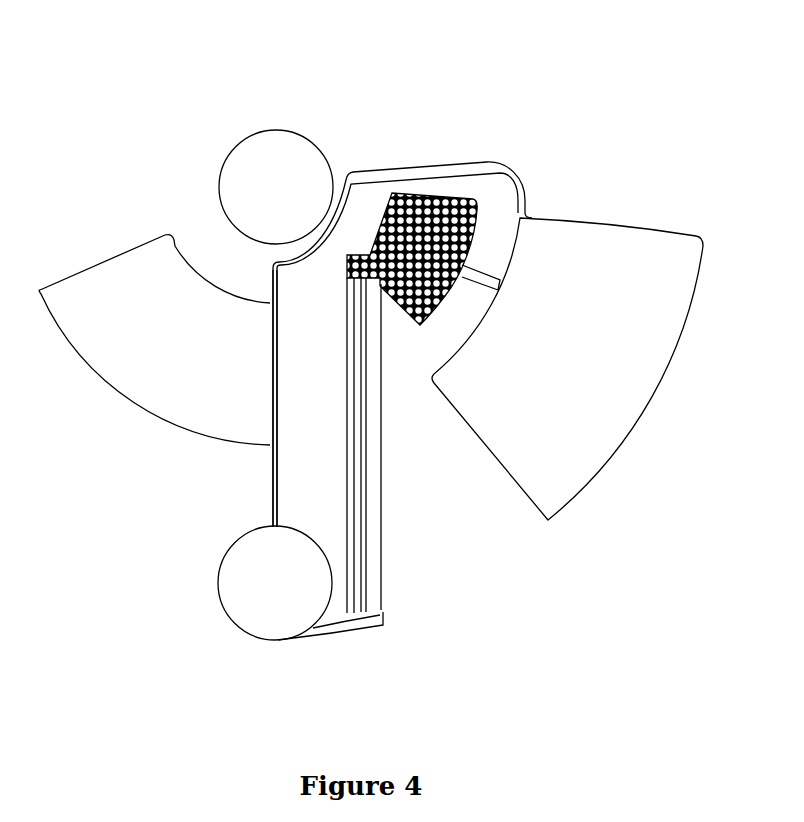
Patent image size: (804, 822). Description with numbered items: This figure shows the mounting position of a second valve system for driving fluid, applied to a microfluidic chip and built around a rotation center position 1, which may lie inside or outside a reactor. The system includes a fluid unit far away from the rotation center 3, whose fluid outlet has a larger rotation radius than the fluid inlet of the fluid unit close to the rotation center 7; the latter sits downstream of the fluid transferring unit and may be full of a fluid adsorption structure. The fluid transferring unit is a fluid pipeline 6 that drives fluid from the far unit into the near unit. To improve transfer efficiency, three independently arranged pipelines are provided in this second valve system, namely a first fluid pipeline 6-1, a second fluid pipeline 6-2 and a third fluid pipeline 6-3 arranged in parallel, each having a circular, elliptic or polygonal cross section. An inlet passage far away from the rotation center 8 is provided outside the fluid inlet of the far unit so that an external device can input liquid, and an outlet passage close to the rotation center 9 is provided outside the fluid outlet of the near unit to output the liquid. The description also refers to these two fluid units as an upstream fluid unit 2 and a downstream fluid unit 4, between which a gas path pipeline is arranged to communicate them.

The rotation center position 1 is at (278, 155).
The upstream fluid unit 2 is at (82, 293).
The fluid unit far away from the rotation center 3 is at (237, 592).
The downstream fluid unit 4 is at (630, 245).
The fluid pipeline 6 is at (353, 172).
The first fluid pipeline 6-1 is at (352, 582).
The second fluid pipeline 6-2 is at (367, 535).
The third fluid pipeline 6-3 is at (382, 488).
The fluid unit close to the rotation center 7 is at (411, 193).
The inlet passage far away from the rotation center 8 is at (275, 488).
The outlet passage close to the rotation center 9 is at (485, 278).